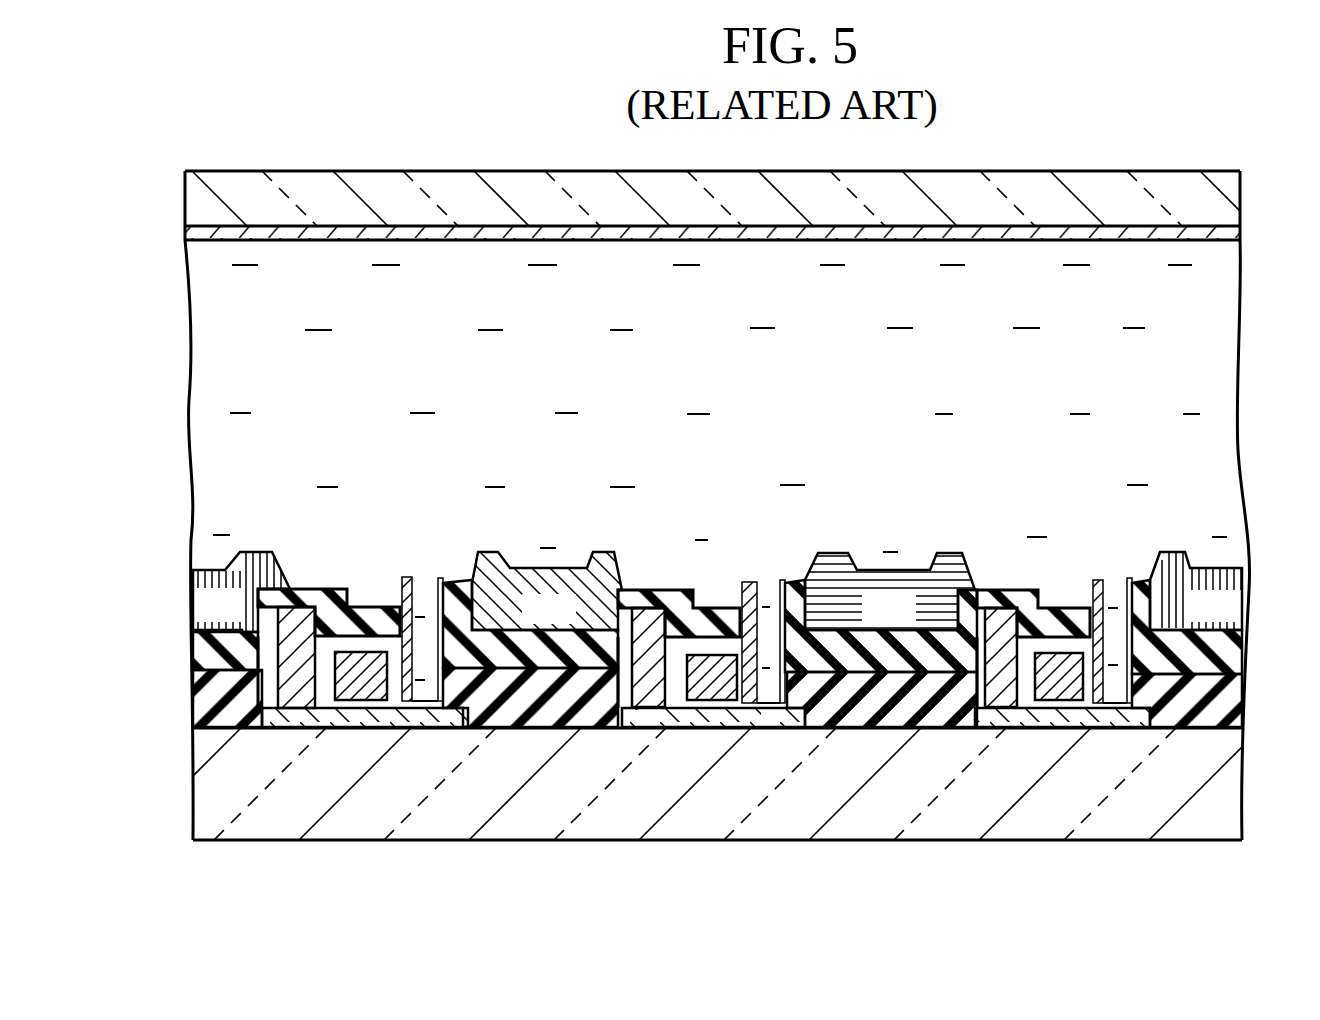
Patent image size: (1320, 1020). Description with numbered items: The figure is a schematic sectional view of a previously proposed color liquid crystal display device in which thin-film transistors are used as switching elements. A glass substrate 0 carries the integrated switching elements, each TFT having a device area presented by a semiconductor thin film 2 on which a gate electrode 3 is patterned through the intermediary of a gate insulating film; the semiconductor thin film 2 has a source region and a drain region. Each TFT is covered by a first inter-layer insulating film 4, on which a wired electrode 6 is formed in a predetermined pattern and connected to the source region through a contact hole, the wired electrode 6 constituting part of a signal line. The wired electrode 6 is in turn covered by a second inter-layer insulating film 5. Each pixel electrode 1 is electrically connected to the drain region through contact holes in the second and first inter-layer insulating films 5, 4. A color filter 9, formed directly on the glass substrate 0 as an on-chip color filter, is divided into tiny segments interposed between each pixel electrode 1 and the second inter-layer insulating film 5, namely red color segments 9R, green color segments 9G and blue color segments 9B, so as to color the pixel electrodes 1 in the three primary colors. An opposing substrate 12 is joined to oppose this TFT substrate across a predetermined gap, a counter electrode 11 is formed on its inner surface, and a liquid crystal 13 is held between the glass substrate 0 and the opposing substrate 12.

The glass substrate 0 is at (953, 797).
The pixel electrode 1 is at (1237, 568).
The semiconductor thin film 2 is at (737, 722).
The gate electrode 3 is at (710, 690).
The first inter-layer insulating film 4 is at (550, 706).
The second inter-layer insulating film 5 is at (520, 647).
The wired electrode 6 is at (641, 688).
The color filter 9 is at (717, 525).
The red color segment 9R is at (717, 592).
The green color segment 9G is at (528, 624).
The blue color segment 9B is at (868, 624).
The counter electrode 11 is at (524, 232).
The opposing substrate 12 is at (438, 188).
The liquid crystal 13 is at (323, 308).
The thin-film transistor TFT is at (679, 742).